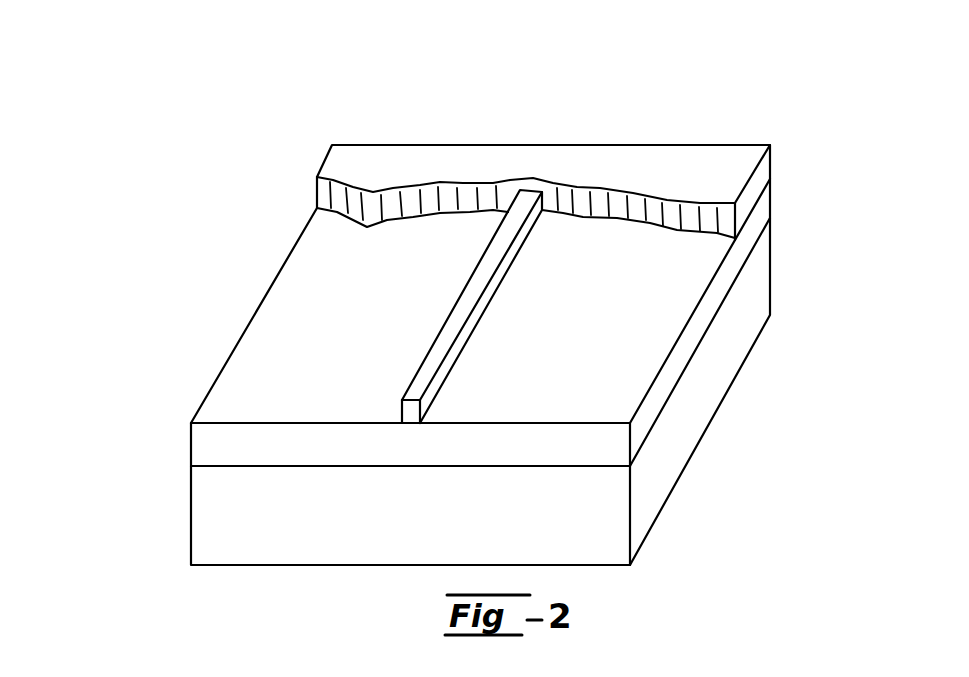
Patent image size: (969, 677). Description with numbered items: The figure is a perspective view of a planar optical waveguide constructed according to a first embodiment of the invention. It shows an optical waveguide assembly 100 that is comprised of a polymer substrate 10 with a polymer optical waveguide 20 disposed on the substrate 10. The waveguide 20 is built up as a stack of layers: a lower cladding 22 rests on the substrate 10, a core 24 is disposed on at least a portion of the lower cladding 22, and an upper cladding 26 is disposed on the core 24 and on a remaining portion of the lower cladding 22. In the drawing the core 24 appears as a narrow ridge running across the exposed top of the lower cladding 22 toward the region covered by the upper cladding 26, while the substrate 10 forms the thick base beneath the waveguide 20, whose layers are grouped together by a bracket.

The optical waveguide assembly 100 is at (774, 82).
The polymer substrate 10 is at (657, 486).
The polymer optical waveguide 20 is at (230, 147).
The lower cladding 22 is at (650, 410).
The core 24 is at (463, 289).
The upper cladding 26 is at (670, 143).